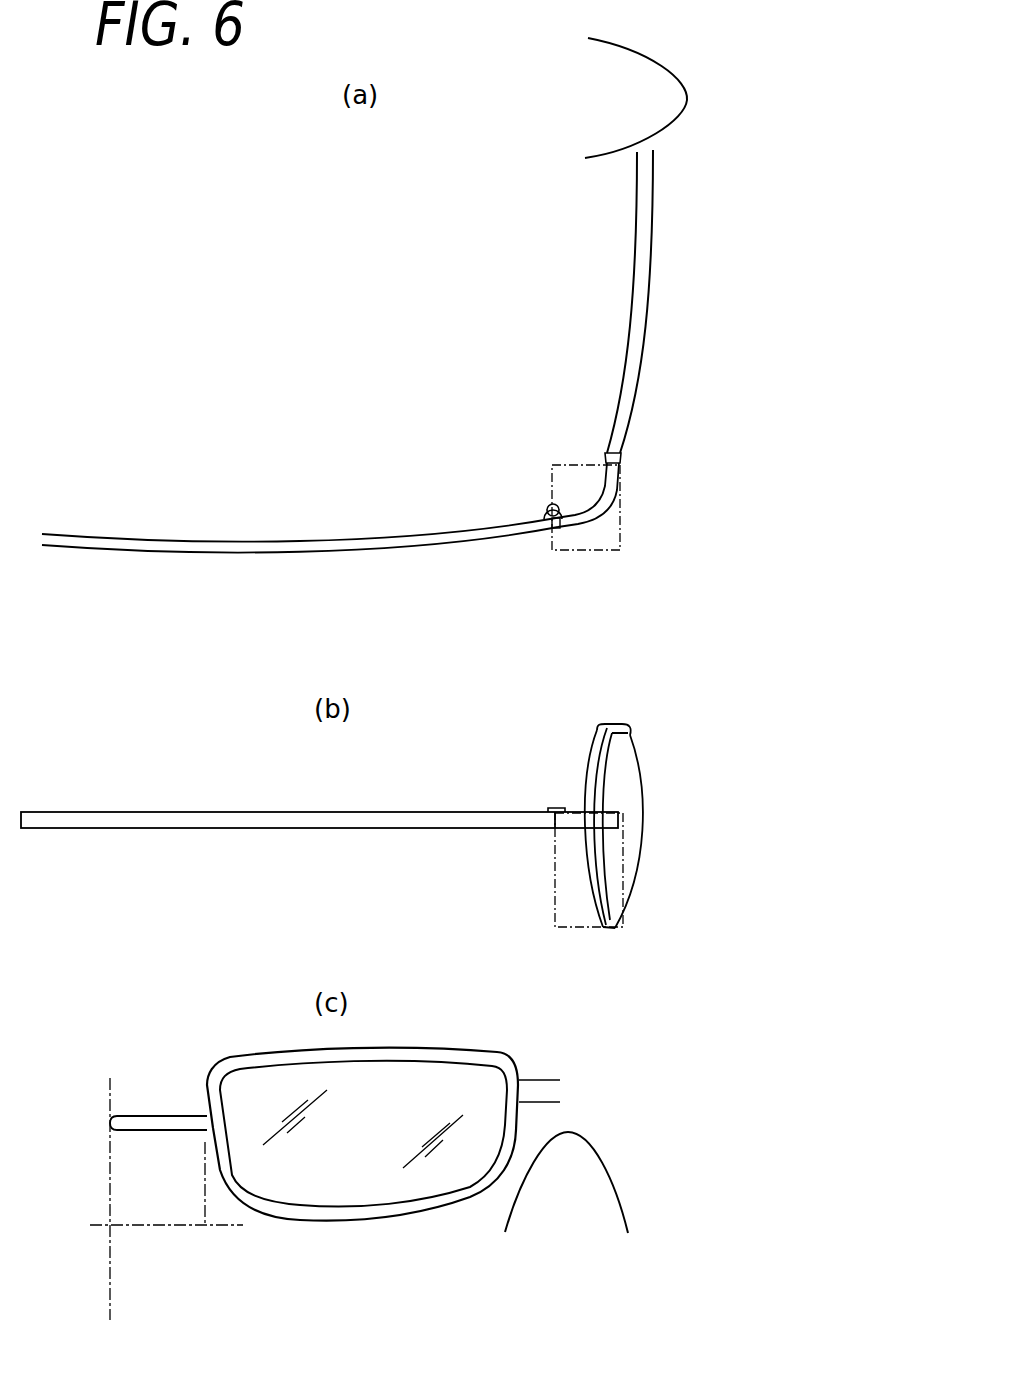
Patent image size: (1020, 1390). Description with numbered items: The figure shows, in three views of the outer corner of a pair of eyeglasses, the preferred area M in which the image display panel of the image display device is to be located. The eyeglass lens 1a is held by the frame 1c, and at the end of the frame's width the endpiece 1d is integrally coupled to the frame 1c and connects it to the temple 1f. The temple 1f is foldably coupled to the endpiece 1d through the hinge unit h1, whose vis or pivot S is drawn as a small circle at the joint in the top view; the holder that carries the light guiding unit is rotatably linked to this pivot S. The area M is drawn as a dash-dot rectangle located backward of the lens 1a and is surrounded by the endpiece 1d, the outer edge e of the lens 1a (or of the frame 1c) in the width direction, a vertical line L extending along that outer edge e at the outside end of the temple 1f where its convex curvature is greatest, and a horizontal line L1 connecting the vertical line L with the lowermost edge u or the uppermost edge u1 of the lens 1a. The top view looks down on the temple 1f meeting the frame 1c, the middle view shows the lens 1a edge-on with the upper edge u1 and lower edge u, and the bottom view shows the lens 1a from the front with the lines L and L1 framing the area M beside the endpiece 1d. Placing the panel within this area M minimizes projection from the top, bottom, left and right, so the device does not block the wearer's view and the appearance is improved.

The lens 1a is at (715, 225).
The frame 1c is at (628, 351).
The endpiece 1d is at (600, 502).
The temple 1f is at (400, 553).
The outer edge e is at (621, 468).
The vis (pivot) S is at (548, 505).
The hinge unit h1 is at (556, 521).
The area M is at (610, 549).
The horizontal line L1 is at (628, 553).
The vertical line L is at (555, 878).
The uppermost edge u1 is at (396, 1048).
The lowermost edge u is at (608, 930).